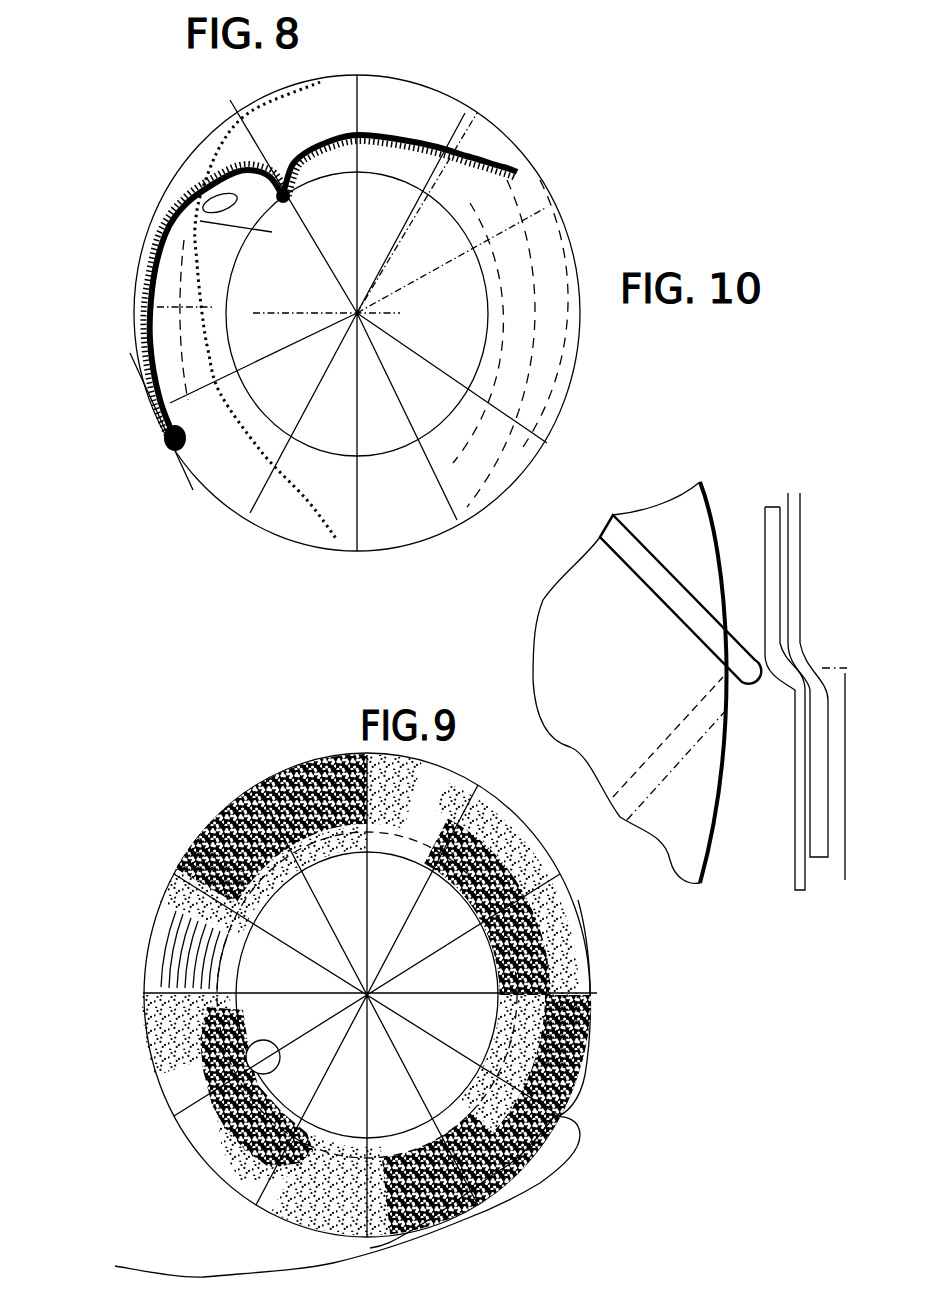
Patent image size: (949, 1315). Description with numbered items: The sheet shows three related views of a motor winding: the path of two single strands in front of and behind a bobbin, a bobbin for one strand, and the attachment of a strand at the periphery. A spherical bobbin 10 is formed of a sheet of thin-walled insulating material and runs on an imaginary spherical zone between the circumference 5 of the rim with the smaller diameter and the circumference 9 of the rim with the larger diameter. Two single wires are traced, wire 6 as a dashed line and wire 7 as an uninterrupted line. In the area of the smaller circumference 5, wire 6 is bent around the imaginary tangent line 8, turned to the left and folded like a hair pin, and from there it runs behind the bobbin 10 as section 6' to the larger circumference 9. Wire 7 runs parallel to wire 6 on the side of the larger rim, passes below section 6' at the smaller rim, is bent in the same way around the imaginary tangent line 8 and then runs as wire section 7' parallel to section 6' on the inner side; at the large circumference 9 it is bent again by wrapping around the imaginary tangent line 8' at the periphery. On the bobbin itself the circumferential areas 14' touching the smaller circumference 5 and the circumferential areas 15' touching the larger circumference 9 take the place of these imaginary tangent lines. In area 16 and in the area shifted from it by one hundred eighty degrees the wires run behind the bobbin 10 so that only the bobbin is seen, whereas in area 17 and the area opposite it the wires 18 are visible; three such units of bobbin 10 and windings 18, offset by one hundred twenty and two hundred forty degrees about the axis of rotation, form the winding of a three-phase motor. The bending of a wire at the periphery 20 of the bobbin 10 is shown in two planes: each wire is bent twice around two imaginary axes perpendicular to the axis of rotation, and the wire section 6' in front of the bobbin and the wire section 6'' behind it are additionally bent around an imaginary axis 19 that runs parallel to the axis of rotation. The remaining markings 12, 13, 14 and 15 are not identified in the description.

In FIG. 8, the circumference of the smaller rim 5 is at (250, 222).
In FIG. 8, the wire 6 is at (437, 313).
In FIG. 8, the wire section 6' is at (160, 307).
In FIG. 10, the wire section 6' is at (722, 599).
In FIG. 10, the wire section 6'' is at (764, 755).
In FIG. 8, the wire 7 is at (512, 156).
In FIG. 8, the wire section 7' is at (131, 151).
In FIG. 8, the imaginary tangent line 8 is at (183, 304).
In FIG. 8, the imaginary tangent line 8' is at (113, 421).
In FIG. 8, the circumference of the larger rim 9 is at (137, 318).
In FIG. 9, the spherical bobbin 10 is at (795, 840).
In FIG. 9, the outer ring 12 is at (246, 793).
In FIG. 9, the inner circle 13 is at (215, 1030).
In FIG. 9, the dark region 14 is at (190, 1093).
In FIG. 9, the circumferential areas 14' is at (190, 931).
In FIG. 9, the ring boundary 15 is at (114, 845).
In FIG. 9, the circumferential areas 15' is at (326, 1201).
In FIG. 9, the area 16 is at (333, 1190).
In FIG. 9, the area 17 is at (150, 940).
In FIG. 9, the wires 18 is at (230, 950).
In FIG. 10, the imaginary axis 19 is at (845, 880).
In FIG. 10, the periphery of the bobbin 20 is at (715, 527).